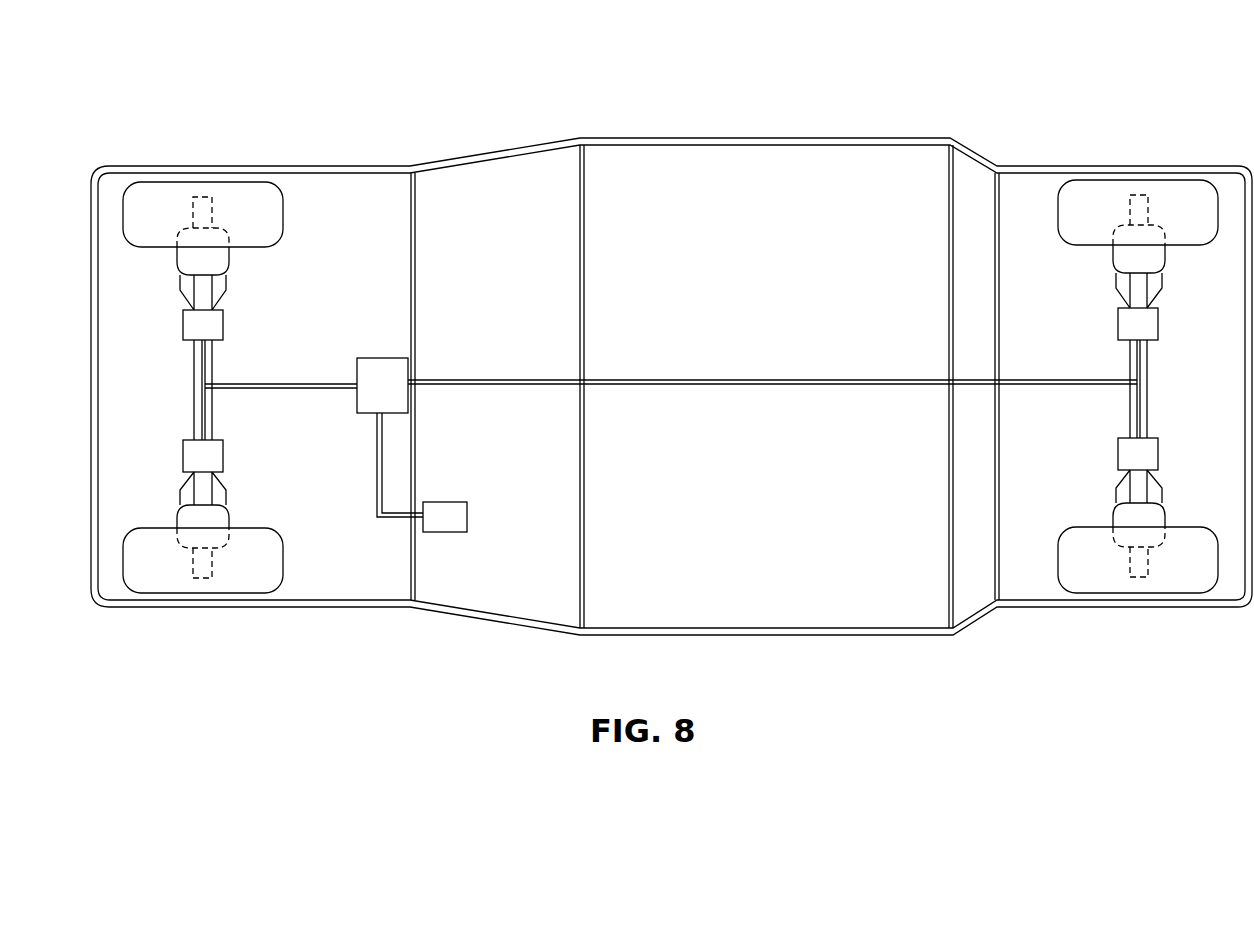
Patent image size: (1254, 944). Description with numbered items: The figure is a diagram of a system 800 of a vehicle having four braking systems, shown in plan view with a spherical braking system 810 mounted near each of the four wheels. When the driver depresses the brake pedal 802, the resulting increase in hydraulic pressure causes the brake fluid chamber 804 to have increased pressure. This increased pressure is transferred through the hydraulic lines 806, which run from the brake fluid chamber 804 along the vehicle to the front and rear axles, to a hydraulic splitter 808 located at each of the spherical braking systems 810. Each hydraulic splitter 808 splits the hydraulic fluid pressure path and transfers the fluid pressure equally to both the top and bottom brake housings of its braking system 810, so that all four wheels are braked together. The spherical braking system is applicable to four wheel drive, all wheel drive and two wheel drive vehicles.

The system 800 is at (992, 115).
The brake pedal 802 is at (445, 532).
The brake fluid chamber 804 is at (380, 363).
The hydraulic lines 806 is at (205, 363).
The hydraulic splitter 808 is at (1152, 322).
The spherical braking system 810 is at (1122, 257).